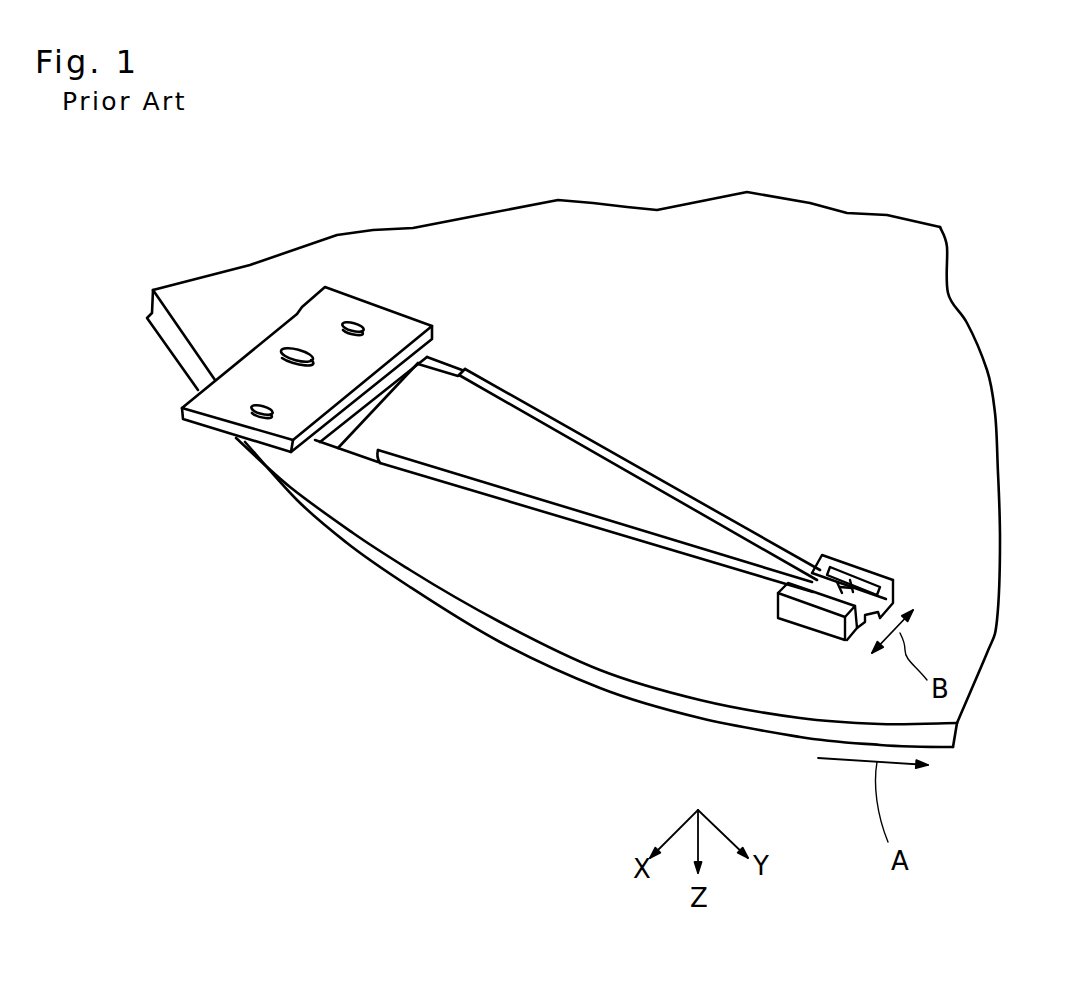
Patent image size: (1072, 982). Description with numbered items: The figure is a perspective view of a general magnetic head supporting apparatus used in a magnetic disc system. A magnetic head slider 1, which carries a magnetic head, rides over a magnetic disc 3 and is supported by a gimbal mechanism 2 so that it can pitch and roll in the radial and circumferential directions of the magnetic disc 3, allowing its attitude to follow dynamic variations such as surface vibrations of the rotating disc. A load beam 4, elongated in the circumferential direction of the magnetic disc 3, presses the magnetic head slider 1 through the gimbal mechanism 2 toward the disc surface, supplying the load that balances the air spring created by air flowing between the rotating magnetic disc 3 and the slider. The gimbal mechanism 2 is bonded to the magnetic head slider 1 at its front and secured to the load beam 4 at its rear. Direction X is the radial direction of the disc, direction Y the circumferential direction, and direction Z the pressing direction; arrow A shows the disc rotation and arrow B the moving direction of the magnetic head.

The magnetic head slider 1 is at (893, 590).
The gimbal mechanism 2 is at (872, 592).
The magnetic disc 3 is at (936, 281).
The load beam 4 is at (633, 463).